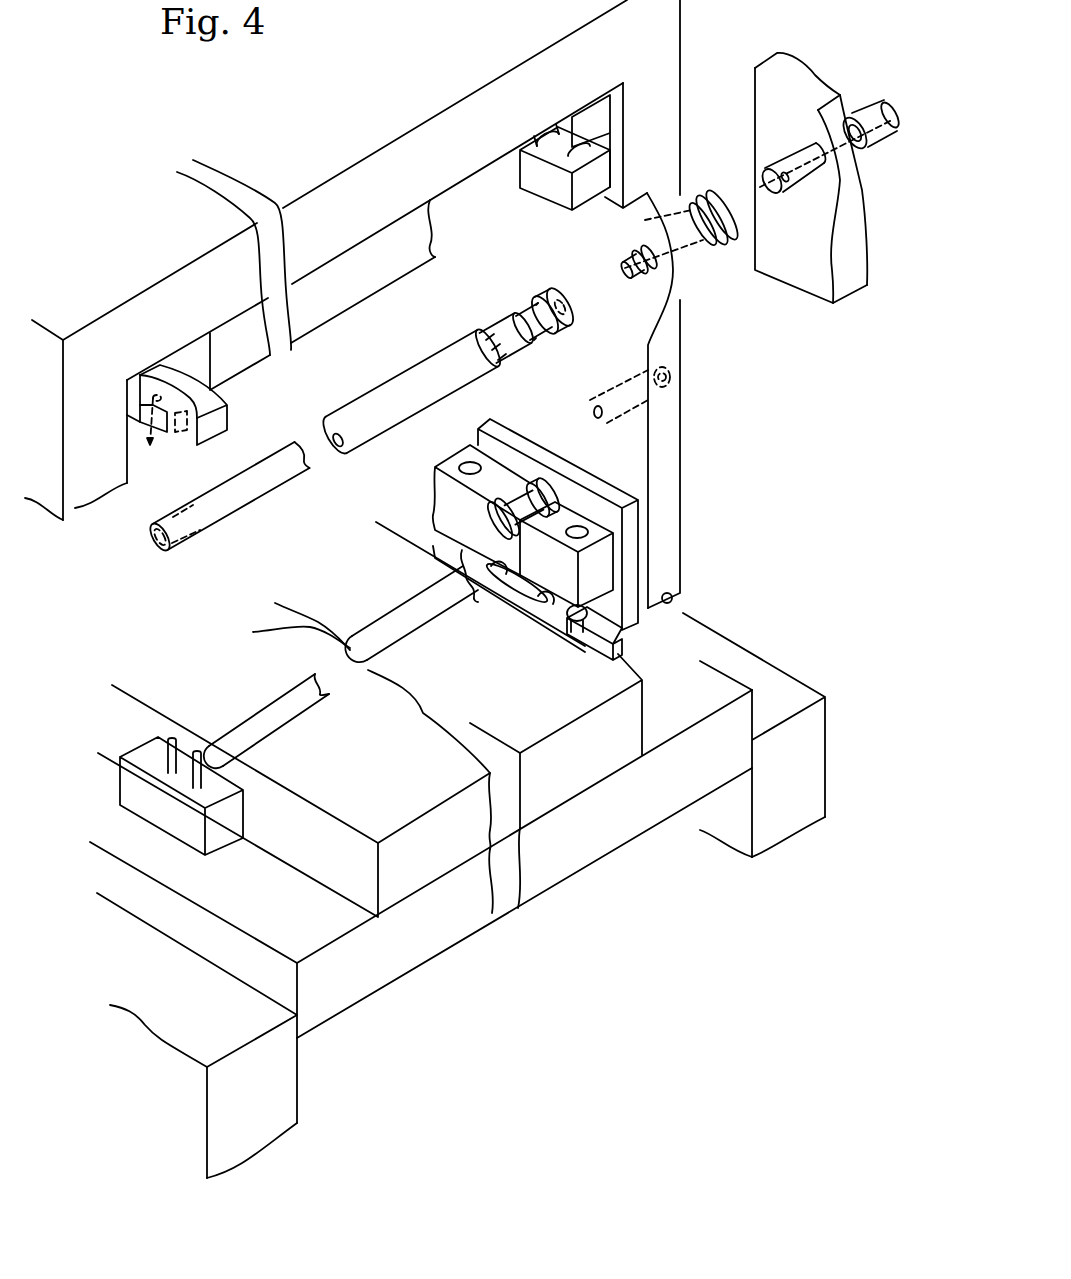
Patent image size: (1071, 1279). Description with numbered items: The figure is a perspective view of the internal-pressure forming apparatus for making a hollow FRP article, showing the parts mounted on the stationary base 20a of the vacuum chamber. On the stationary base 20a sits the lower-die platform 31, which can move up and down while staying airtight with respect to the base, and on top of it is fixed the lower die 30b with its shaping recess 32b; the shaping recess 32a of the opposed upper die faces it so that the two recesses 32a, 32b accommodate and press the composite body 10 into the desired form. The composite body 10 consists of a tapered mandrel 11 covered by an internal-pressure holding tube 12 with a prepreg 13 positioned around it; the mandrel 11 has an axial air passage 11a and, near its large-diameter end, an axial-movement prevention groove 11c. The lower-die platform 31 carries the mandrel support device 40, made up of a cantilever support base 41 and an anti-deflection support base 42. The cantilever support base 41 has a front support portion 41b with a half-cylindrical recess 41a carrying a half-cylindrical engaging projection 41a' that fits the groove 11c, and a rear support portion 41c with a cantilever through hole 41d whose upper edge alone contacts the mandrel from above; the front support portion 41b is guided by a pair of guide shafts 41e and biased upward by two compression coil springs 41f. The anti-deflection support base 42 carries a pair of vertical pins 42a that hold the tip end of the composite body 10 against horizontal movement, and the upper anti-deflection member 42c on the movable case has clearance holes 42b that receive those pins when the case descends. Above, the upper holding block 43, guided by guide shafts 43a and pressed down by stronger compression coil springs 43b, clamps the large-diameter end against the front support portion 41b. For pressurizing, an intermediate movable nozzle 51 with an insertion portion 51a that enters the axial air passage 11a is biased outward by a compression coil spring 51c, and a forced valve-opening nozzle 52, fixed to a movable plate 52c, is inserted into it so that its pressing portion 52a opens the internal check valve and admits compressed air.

The composite body 10 is at (474, 354).
The mandrel 11 is at (540, 300).
The axial air passage 11a is at (563, 307).
The axial-movement prevention groove 11c is at (533, 340).
The internal-pressure holding tube 12 is at (480, 318).
The prepreg 13 is at (423, 355).
The stationary base 20a is at (803, 690).
The lower die 30b is at (327, 868).
The lower-die platform 31 is at (486, 912).
The shaping recess 32a is at (253, 368).
The shaping recess 32b is at (290, 708).
The mandrel support device 40 is at (455, 627).
The cantilever support base 41 is at (497, 593).
The half-cylindrical recess 41a is at (341, 659).
The half-cylindrical engaging projection 41a' is at (431, 510).
The front support portion 41b is at (630, 627).
The rear support portion 41c is at (637, 512).
The cantilever through hole 41d is at (556, 488).
The guide shafts 41e is at (573, 630).
The compression coil springs 41f is at (542, 597).
The anti-deflection support base 42 is at (215, 627).
The vertical pins 42a is at (197, 750).
The clearance holes 42b is at (192, 452).
The upper anti-deflection member 42c is at (212, 436).
The upper holding block 43 is at (537, 175).
The guide shafts 43a is at (525, 200).
The compression coil springs 43b is at (538, 150).
The intermediate movable nozzle 51 is at (686, 220).
The insertion portion 51a is at (617, 275).
The compression coil spring 51c is at (713, 240).
The forced valve-opening nozzle 52 is at (809, 186).
The pressing portion 52a is at (763, 187).
The movable plate 52c is at (797, 270).